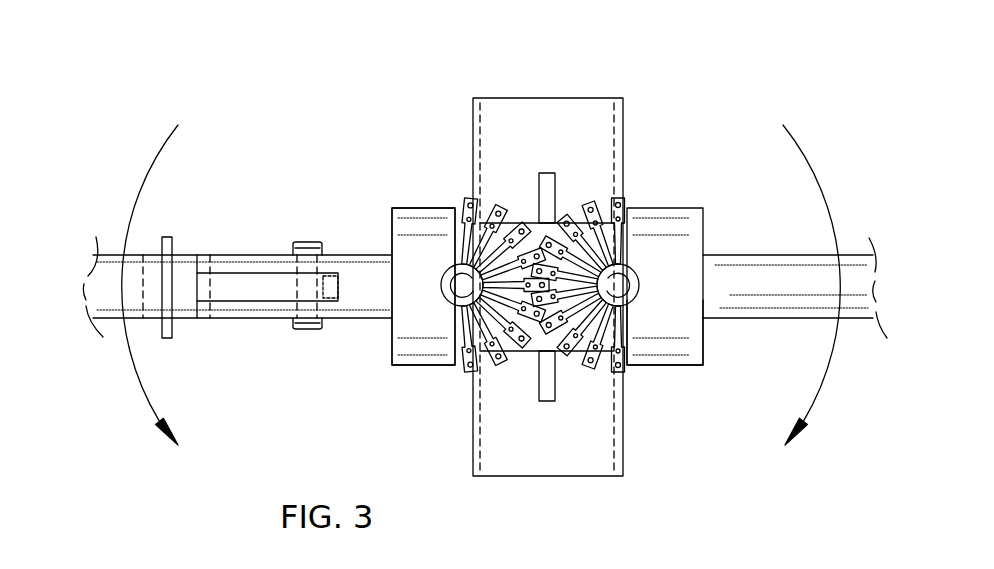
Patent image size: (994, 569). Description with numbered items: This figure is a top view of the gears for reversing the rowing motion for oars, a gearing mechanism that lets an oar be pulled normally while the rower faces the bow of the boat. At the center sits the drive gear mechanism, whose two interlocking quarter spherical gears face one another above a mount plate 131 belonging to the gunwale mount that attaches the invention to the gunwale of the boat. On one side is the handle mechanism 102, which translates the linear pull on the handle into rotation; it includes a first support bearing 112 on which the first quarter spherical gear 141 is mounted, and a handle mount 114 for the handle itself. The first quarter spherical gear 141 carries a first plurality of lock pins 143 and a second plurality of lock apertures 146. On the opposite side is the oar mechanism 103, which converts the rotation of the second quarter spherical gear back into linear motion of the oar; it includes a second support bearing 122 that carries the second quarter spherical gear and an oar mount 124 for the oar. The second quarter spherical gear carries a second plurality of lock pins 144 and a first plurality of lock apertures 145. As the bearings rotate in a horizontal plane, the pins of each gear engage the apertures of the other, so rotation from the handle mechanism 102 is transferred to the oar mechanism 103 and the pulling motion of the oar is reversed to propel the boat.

The handle mechanism 102 is at (688, 282).
The oar mechanism 103 is at (403, 213).
The first support bearing 112 is at (650, 232).
The handle mount 114 is at (682, 345).
The second support bearing 122 is at (435, 233).
The oar mount 124 is at (367, 303).
The mount plate 131 is at (587, 103).
The first quarter spherical gear 141 is at (591, 202).
The first plurality of lock pins 143 is at (587, 207).
The second plurality of lock pins 144 is at (503, 213).
The first plurality of lock apertures 145 is at (508, 362).
The second plurality of lock apertures 146 is at (586, 370).